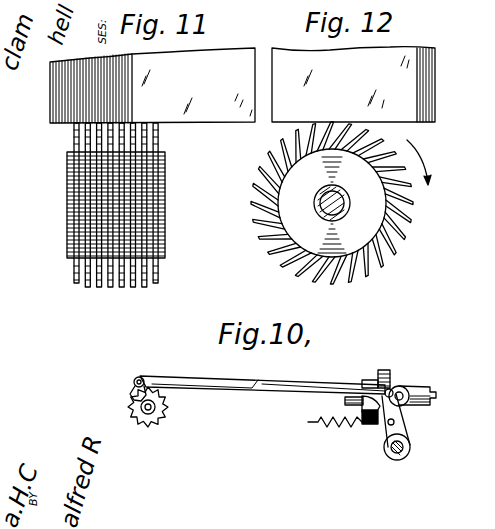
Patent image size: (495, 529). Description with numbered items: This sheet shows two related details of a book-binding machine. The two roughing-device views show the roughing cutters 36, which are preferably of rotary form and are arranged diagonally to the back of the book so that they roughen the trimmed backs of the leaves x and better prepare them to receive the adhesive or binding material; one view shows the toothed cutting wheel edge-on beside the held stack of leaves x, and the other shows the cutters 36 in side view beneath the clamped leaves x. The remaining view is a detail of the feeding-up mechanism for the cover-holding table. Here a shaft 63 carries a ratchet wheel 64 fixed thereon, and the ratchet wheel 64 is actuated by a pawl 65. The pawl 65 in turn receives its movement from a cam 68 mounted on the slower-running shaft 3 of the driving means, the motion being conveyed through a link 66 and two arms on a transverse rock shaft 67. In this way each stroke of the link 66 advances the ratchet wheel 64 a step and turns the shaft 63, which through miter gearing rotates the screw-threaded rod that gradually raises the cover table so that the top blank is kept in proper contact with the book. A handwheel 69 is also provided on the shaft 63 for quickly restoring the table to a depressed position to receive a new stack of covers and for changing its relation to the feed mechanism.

In FIG. 11, the leaves x is at (88, 98).
In FIG. 12, the leaves x is at (425, 73).
In FIG. 11, the roughing cutters 36 is at (135, 182).
In FIG. 12, the roughing cutters 36 is at (388, 141).
In FIG. 10, the shaft 63 is at (158, 409).
In FIG. 10, the ratchet wheel 64 is at (130, 405).
In FIG. 10, the pawl 65 is at (137, 377).
In FIG. 10, the link 66 is at (320, 383).
In FIG. 10, the transverse rock shaft 67 is at (390, 452).
In FIG. 10, the cam 68 is at (385, 368).
In FIG. 10, the shaft 3 is at (425, 390).
In FIG. 10, the handwheel 69 is at (494, 380).